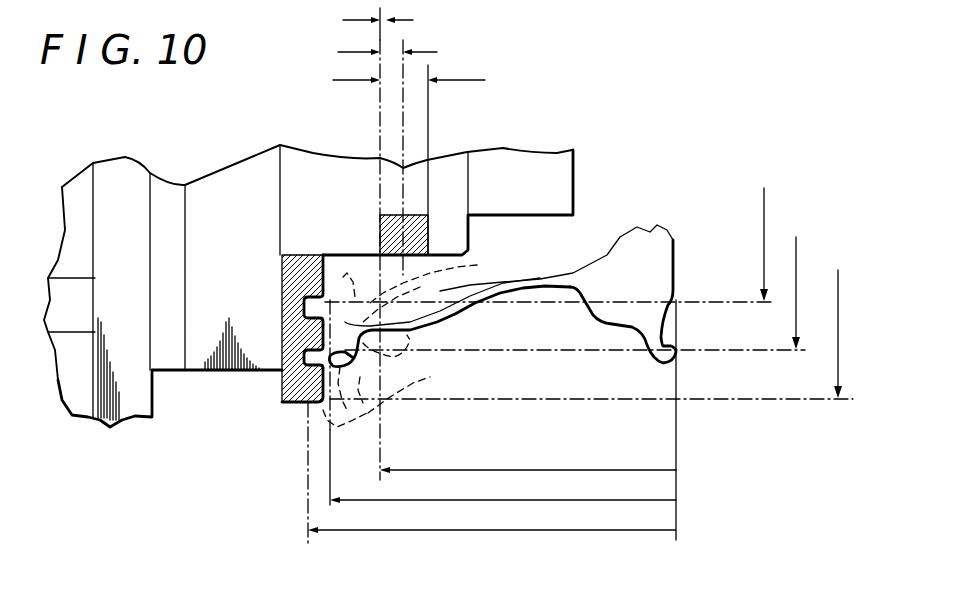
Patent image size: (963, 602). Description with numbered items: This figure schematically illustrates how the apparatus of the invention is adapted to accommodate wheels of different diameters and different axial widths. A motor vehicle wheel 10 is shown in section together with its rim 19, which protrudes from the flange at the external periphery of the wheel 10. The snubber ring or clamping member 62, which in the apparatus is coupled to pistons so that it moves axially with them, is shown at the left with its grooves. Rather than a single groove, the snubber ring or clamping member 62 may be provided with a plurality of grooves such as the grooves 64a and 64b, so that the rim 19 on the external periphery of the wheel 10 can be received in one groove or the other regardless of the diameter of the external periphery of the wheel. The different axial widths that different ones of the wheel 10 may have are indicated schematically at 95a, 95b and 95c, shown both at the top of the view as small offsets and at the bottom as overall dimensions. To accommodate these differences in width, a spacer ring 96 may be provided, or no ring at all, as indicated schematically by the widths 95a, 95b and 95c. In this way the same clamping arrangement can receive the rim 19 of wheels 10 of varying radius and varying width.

The motor vehicle wheel 10 is at (681, 238).
The rim 19 is at (337, 365).
The snubber ring or clamping member 62 is at (305, 387).
The groove 64a is at (313, 355).
The groove 64b is at (317, 312).
The spacer ring 96 is at (440, 218).
The axial width 95a is at (235, 545).
The axial width 95b is at (227, 495).
The axial width 95c is at (428, 436).